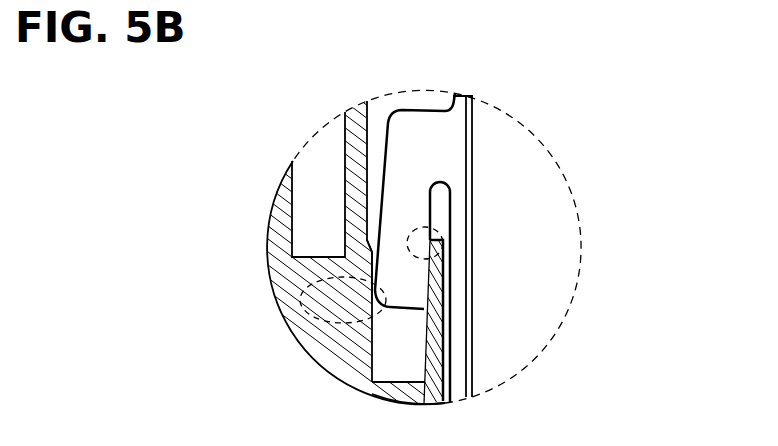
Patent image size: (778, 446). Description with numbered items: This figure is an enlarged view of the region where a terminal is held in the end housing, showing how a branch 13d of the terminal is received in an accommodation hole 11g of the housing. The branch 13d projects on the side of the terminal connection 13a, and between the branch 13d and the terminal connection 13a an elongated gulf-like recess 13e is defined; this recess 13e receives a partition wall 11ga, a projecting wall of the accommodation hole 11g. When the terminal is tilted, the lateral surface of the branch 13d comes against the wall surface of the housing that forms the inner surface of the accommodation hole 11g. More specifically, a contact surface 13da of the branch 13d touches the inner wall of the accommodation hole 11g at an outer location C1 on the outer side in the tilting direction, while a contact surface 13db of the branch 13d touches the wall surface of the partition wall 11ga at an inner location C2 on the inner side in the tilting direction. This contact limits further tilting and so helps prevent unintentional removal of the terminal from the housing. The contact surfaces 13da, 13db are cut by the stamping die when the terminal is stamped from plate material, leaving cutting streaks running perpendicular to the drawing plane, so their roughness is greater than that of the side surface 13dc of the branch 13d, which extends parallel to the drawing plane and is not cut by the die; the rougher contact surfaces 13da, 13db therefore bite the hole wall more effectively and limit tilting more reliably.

The terminal connection 13a is at (462, 277).
The branch 13d is at (403, 188).
The contact surface 13da is at (372, 290).
The contact surface 13db is at (451, 280).
The side surface 13dc is at (385, 277).
The gulf-like recess 13e is at (442, 204).
The accommodation hole 11g is at (393, 382).
The partition wall 11ga is at (400, 326).
The outer location C1 is at (300, 320).
The inner location C2 is at (443, 227).